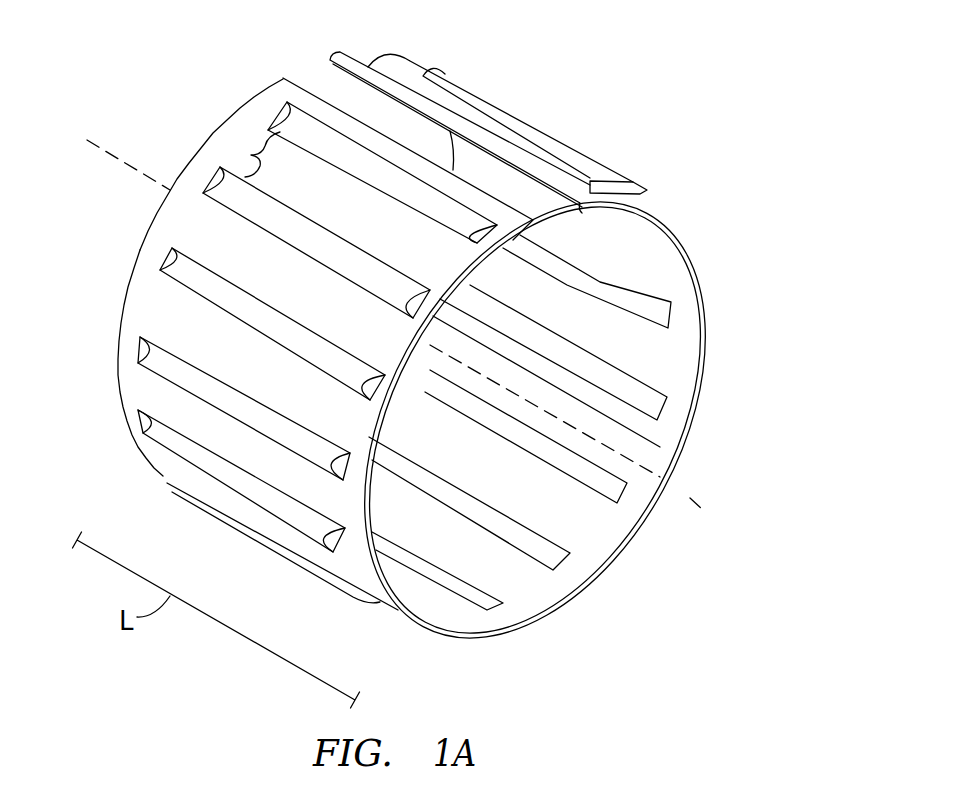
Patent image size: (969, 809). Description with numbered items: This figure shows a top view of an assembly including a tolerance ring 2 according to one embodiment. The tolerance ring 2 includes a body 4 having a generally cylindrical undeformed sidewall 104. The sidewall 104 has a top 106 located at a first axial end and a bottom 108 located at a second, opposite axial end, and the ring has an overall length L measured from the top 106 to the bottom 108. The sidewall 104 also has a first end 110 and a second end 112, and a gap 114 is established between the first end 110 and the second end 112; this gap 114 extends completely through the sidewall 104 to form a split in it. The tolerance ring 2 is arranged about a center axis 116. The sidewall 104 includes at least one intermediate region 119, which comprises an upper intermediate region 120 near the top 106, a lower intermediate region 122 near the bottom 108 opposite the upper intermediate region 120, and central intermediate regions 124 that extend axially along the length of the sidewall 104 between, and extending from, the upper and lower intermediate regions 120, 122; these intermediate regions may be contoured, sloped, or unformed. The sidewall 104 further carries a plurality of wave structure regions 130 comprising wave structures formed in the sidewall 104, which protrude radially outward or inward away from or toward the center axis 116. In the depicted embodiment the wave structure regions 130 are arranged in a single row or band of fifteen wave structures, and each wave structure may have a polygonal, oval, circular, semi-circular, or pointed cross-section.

The tolerance ring 2 is at (685, 97).
The body 4 is at (675, 407).
The sidewall 104 is at (268, 96).
The top 106 is at (603, 563).
The bottom 108 is at (130, 283).
The first end 110 is at (297, 76).
The second end 112 is at (328, 64).
The gap 114 is at (551, 232).
The center axis 116 is at (670, 488).
The intermediate region 119 is at (183, 227).
The upper intermediate region 120 is at (340, 547).
The lower intermediate region 122 is at (117, 346).
The central intermediate region 124 is at (250, 153).
The wave structure region 130 is at (163, 440).